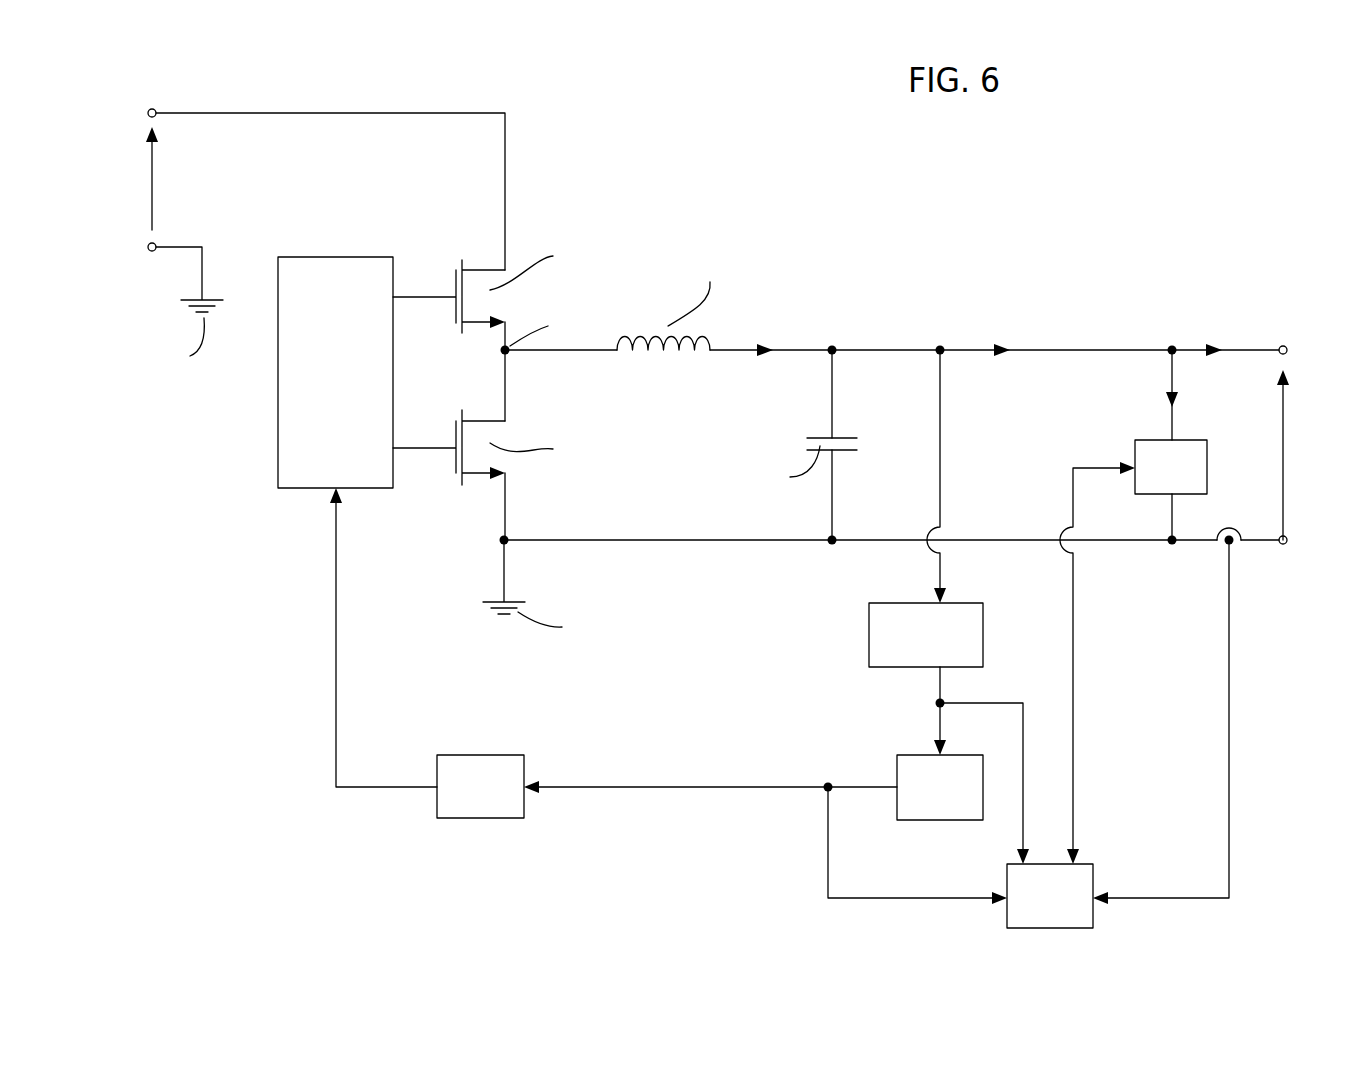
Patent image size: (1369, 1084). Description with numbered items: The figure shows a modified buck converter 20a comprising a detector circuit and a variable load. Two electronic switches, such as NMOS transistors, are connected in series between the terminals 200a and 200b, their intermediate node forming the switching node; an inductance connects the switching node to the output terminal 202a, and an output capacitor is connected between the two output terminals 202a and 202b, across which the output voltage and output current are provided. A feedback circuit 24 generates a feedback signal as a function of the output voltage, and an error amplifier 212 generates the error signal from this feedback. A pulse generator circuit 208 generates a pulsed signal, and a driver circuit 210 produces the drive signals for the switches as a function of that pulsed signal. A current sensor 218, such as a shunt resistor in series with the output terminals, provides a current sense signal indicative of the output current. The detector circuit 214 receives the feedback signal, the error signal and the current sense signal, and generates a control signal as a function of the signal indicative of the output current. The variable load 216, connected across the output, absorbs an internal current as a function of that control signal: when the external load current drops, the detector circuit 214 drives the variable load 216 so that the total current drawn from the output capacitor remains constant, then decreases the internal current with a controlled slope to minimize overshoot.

The modified buck converter 20a is at (1030, 268).
The input terminal 200a is at (150, 110).
The input terminal 200b is at (150, 250).
The driver circuit 210 is at (338, 267).
The output terminal 202a is at (1289, 347).
The output terminal 202b is at (1289, 544).
The variable load 216 is at (1136, 428).
The current sensor 218 is at (1218, 548).
The feedback circuit 24 is at (880, 642).
The error amplifier 212 is at (940, 822).
The detector circuit 214 is at (1030, 920).
The pulse generator circuit 208 is at (470, 805).